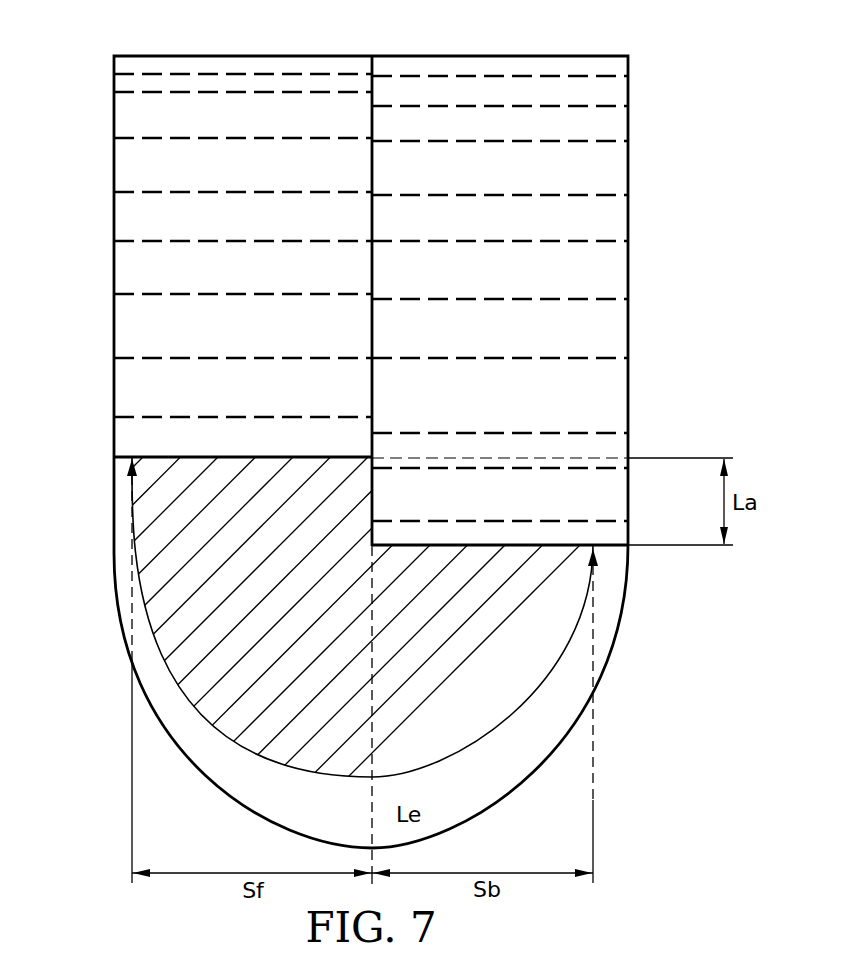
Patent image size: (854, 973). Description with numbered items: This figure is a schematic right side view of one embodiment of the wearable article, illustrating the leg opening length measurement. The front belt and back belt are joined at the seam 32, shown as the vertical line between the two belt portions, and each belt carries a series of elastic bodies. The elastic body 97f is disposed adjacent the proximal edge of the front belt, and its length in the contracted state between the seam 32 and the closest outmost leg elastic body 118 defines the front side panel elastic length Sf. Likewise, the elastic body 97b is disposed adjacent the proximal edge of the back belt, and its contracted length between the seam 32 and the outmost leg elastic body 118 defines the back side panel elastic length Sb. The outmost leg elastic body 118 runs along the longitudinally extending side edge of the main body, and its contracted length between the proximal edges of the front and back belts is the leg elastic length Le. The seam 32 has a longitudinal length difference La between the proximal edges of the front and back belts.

The seam 32 is at (372, 66).
The elastic body 97f is at (145, 417).
The elastic body 97b is at (598, 521).
The outmost leg elastic body 118 is at (226, 732).